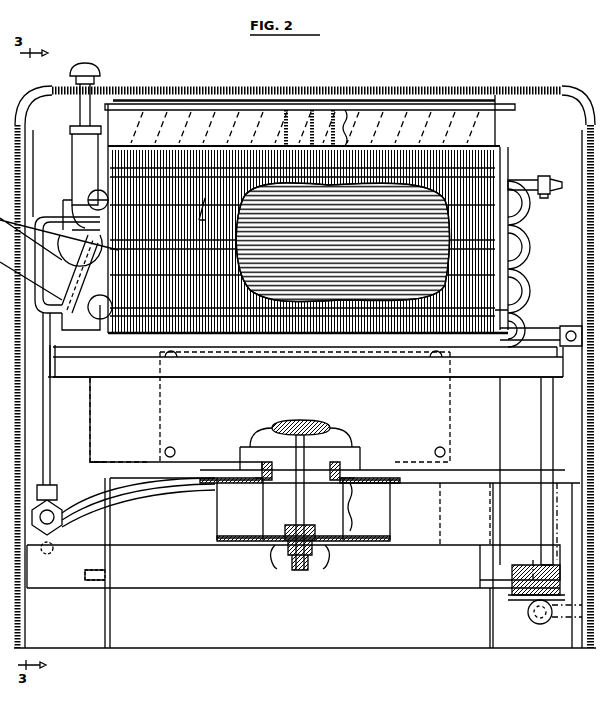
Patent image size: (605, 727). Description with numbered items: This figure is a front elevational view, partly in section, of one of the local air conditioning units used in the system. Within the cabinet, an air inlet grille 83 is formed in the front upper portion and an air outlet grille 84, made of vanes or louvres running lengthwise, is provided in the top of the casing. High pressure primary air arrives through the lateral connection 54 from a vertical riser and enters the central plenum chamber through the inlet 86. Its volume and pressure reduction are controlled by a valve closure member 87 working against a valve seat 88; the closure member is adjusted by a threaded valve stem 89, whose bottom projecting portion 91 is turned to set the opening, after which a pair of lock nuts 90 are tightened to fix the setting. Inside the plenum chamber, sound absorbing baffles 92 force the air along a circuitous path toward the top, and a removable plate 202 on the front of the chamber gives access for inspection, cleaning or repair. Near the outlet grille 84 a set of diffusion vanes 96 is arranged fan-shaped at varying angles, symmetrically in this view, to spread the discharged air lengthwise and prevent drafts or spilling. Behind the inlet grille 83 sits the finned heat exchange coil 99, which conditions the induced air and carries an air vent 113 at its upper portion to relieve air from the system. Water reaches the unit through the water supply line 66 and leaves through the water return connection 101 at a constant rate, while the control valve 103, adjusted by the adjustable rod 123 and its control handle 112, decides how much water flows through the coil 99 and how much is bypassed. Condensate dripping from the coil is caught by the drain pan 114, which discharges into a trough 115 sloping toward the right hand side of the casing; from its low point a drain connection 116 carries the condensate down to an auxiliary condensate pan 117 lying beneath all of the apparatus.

The lateral connection 54 is at (420, 522).
The water supply line 66 is at (60, 495).
The air inlet grille 83 is at (248, 228).
The air outlet grille 84 is at (210, 98).
The inlet 86 is at (318, 476).
The valve closure member 87 is at (352, 443).
The valve seat 88 is at (272, 470).
The valve stem 89 is at (298, 504).
The lock nuts 90 is at (312, 553).
The bottom projecting portion 91 is at (288, 553).
The sound absorbing baffles 92 is at (285, 425).
The diffusion vanes 96 is at (150, 100).
The coil 99 is at (208, 201).
The water return connection 101 is at (150, 484).
The control valve 103 is at (80, 165).
The control handle 112 is at (100, 70).
The air vent 113 is at (535, 188).
The drain pan 114 is at (527, 340).
The trough 115 is at (386, 380).
The drain connection 116 is at (547, 432).
The auxiliary condensate pan 117 is at (357, 578).
The adjustable rod 123 is at (80, 117).
The removable plate 202 is at (165, 418).